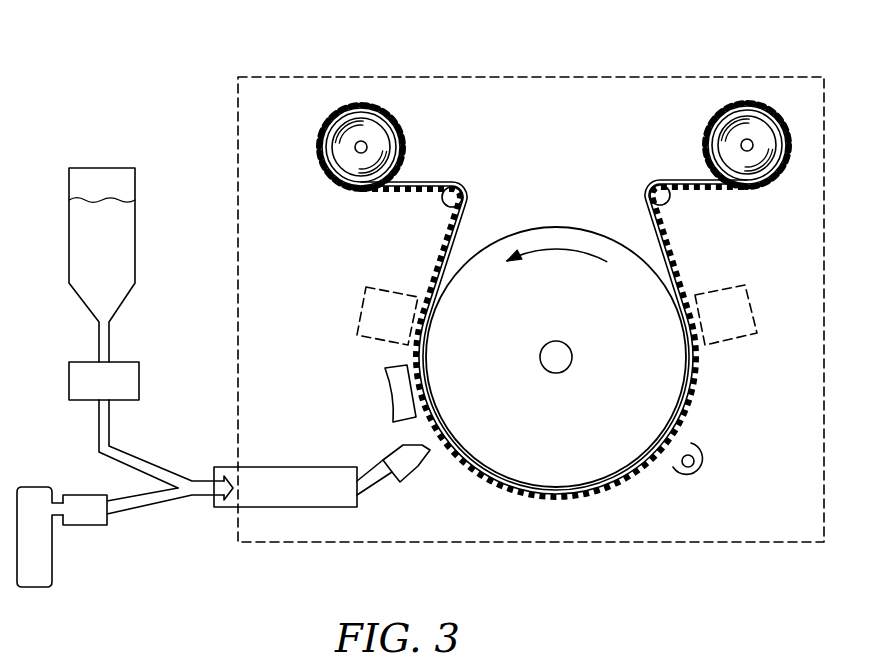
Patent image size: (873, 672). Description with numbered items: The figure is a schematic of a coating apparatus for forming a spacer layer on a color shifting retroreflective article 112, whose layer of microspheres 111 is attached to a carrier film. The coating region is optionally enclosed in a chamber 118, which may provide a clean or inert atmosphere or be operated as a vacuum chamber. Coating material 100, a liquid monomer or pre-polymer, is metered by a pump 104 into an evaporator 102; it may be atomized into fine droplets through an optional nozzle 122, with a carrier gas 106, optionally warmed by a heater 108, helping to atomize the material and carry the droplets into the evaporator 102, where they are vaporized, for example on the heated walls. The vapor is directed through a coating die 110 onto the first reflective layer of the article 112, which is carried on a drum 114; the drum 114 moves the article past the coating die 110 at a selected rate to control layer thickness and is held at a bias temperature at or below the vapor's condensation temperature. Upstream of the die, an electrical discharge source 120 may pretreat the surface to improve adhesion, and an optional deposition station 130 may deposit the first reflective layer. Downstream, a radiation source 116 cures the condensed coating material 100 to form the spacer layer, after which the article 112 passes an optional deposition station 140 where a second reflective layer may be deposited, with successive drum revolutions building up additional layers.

The coating material 100 is at (127, 223).
The evaporator 102 is at (290, 470).
The pump 104 is at (133, 381).
The carrier gas 106 is at (36, 580).
The heater 108 is at (77, 497).
The coating die 110 is at (395, 447).
The microspheres 111 is at (470, 470).
The color shifting retroreflective article 112 is at (470, 202).
The drum 114 is at (673, 392).
The radiation source 116 is at (700, 471).
The chamber 118 is at (368, 75).
The electrical discharge source 120 is at (384, 375).
The nozzle 122 is at (229, 501).
The deposition station 130 is at (371, 311).
The deposition station 140 is at (740, 310).